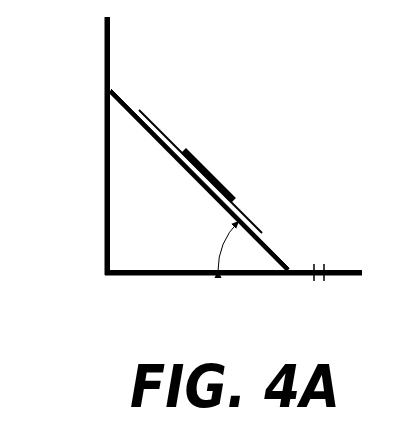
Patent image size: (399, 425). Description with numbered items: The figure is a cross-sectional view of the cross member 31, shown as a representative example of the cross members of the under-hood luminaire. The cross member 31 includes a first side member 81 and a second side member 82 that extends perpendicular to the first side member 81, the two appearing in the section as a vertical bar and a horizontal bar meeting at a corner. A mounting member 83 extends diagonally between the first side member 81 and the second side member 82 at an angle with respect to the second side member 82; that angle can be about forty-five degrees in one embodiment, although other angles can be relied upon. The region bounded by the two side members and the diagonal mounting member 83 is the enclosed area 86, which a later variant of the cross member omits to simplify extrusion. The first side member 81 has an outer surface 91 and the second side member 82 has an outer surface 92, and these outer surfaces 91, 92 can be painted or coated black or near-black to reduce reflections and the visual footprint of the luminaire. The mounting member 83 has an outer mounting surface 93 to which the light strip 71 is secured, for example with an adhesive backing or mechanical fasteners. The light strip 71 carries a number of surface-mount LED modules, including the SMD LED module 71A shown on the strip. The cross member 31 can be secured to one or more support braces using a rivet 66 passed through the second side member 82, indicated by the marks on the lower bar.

The cross member 31 is at (82, 42).
The light strip 71 is at (140, 108).
The SMD LED module 71A is at (220, 178).
The first side member 81 is at (105, 172).
The second side member 82 is at (203, 276).
The mounting member 83 is at (197, 177).
The enclosed area 86 is at (156, 253).
The outer surface 91 is at (102, 207).
The outer surface 92 is at (266, 277).
The outer mounting surface 93 is at (272, 240).
The rivet 66 is at (324, 281).